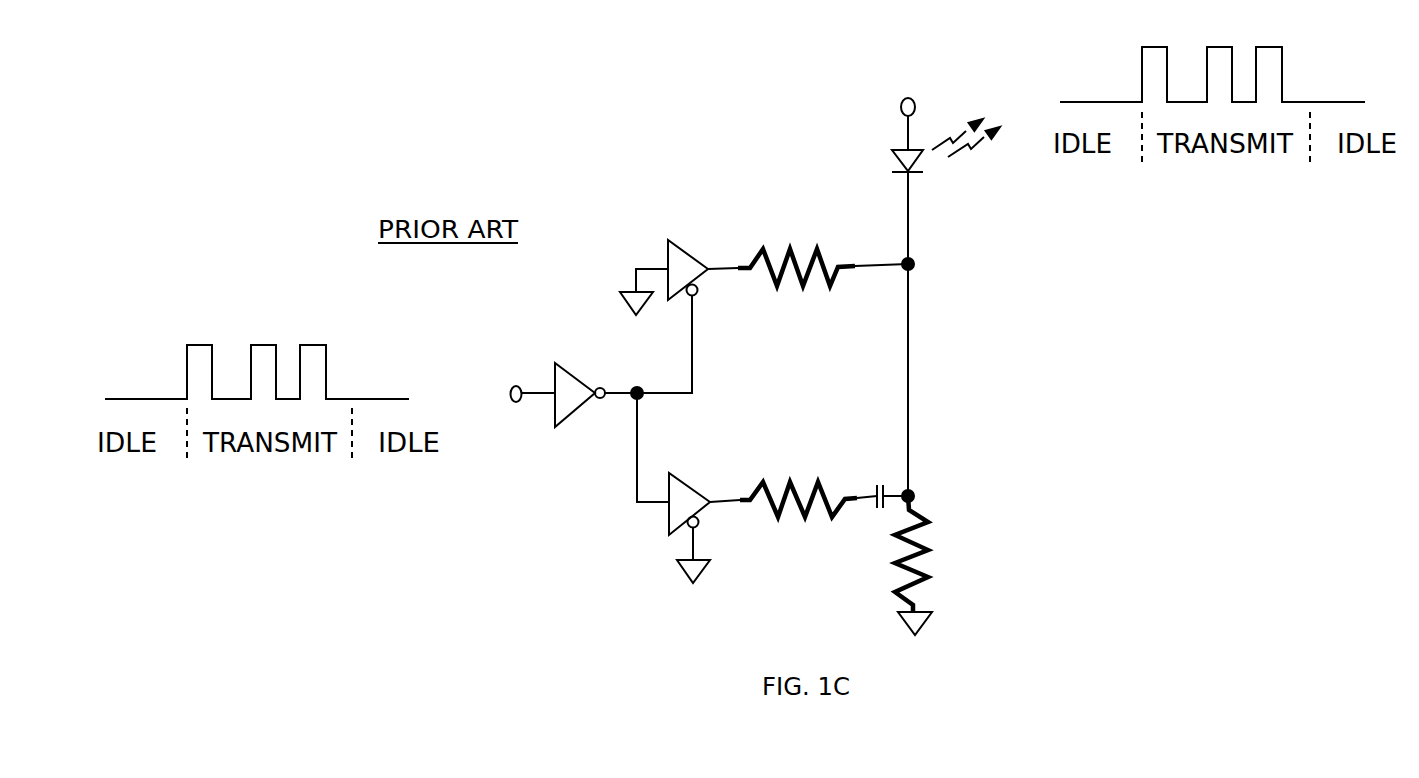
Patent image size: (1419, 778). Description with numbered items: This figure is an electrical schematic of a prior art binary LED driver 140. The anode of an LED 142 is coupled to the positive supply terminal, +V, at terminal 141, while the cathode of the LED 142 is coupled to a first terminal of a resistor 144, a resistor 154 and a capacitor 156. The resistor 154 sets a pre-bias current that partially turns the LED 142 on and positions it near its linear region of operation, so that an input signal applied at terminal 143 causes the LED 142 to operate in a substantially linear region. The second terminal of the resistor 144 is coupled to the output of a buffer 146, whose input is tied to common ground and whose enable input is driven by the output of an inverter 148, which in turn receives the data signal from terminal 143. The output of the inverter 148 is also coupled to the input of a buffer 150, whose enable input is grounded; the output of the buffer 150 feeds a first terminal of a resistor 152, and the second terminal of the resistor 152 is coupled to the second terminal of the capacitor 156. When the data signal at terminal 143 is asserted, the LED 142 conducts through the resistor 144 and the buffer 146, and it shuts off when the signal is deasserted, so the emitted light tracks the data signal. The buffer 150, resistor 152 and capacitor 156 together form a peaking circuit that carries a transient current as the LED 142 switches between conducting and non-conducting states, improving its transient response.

The binary LED driver 140 is at (560, 134).
The terminal 141 is at (904, 97).
The LED 142 is at (890, 152).
The terminal 143 is at (517, 385).
The resistor 144 is at (792, 248).
The buffer 146 is at (673, 245).
The inverter 148 is at (567, 372).
The buffer 150 is at (678, 473).
The resistor 152 is at (790, 482).
The resistor 154 is at (932, 536).
The capacitor 156 is at (880, 518).